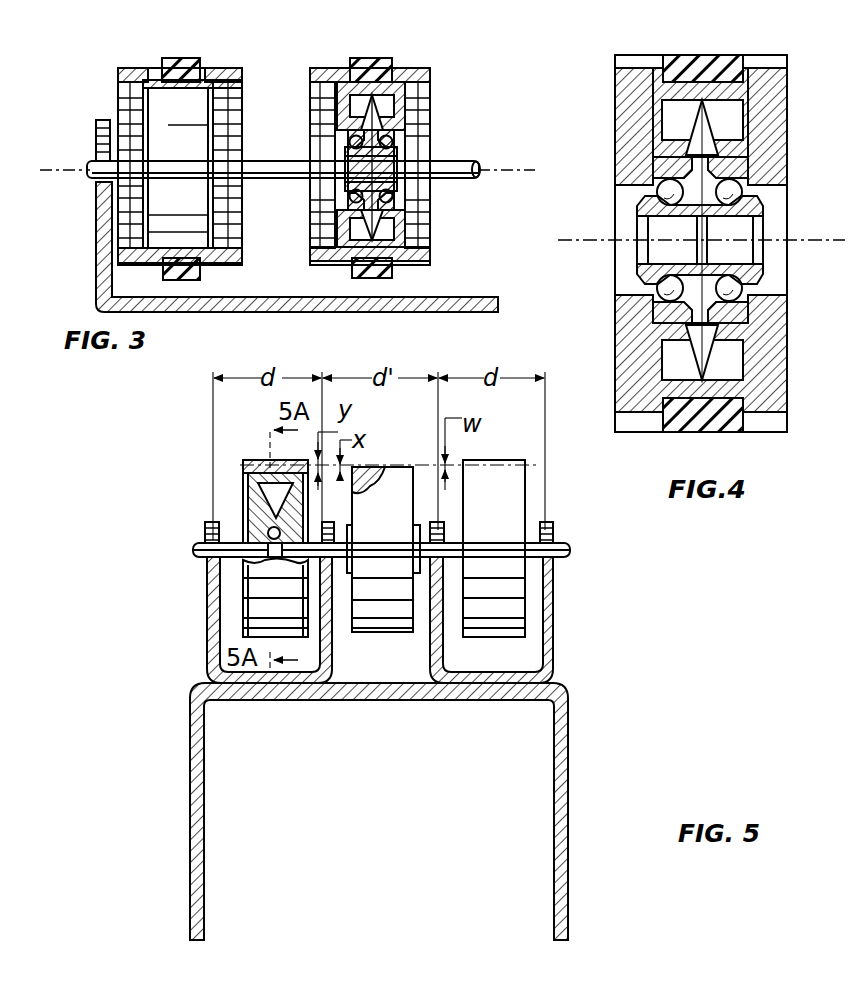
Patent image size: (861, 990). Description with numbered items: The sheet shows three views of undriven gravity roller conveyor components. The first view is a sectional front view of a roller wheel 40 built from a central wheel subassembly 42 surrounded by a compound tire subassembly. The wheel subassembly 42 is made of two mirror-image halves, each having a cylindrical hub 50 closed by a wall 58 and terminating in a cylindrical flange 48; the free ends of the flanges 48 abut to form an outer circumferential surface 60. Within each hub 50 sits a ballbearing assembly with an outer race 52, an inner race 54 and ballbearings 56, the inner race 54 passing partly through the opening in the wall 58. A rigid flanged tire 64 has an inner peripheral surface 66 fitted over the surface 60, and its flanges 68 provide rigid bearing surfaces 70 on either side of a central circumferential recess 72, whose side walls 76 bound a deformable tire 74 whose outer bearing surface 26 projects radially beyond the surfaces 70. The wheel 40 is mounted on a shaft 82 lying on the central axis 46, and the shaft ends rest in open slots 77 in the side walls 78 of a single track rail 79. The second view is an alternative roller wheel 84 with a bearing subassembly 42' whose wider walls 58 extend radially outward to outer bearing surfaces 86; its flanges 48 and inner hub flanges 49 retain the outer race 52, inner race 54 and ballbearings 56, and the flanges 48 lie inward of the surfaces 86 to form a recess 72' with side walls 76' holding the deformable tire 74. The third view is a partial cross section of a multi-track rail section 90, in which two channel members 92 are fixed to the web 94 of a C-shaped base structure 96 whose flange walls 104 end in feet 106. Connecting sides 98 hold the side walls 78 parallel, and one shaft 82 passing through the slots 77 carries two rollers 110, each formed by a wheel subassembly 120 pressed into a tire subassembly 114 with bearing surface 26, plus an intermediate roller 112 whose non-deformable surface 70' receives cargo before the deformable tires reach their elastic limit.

In FIG. 3, the outer circumferential bearing surface of deformable tire 26 is at (372, 60).
In FIG. 4, the outer circumferential bearing surface of deformable tire 26 is at (719, 53).
In FIG. 5, the outer circumferential bearing surface of deformable tire 26 is at (265, 460).
In FIG. 3, the roller wheel 40 is at (245, 60).
In FIG. 3, the central wheel subassembly 42 is at (408, 159).
In FIG. 4, the central bearing portion subassembly 42' is at (616, 126).
In FIG. 3, the central axis 46 is at (505, 175).
In FIG. 4, the central axis 46 is at (802, 246).
In FIG. 3, the cylindrical flange 48 is at (396, 216).
In FIG. 4, the cylindrical flange 48 is at (746, 116).
In FIG. 3, the inner hub flange 49 is at (352, 112).
In FIG. 4, the inner hub flange 49 is at (732, 346).
In FIG. 3, the cylindrical hub 50 is at (410, 150).
In FIG. 3, the outer race 52 is at (346, 205).
In FIG. 4, the outer race 52 is at (655, 167).
In FIG. 3, the inner race 54 is at (341, 190).
In FIG. 4, the inner race 54 is at (636, 222).
In FIG. 3, the ballbearings 56 is at (396, 141).
In FIG. 4, the ballbearings 56 is at (660, 191).
In FIG. 3, the wall 58 is at (336, 136).
In FIG. 4, the wall 58 is at (788, 134).
In FIG. 3, the outer circumferential surface 60 is at (166, 116).
In FIG. 3, the rigid flanged tire 64 is at (118, 80).
In FIG. 3, the inner peripheral surface 66 is at (214, 110).
In FIG. 3, the flanges 68 is at (430, 267).
In FIG. 3, the outer circumferential rigid bearing surface 70 is at (283, 154).
In FIG. 5, the non-deformable outer circumferential bearing surface 70' is at (384, 529).
In FIG. 3, the central circumferential recess 72 is at (192, 301).
In FIG. 4, the central circumferential recess 72' is at (681, 425).
In FIG. 3, the deformable tire 74 is at (181, 58).
In FIG. 4, the deformable tire 74 is at (762, 70).
In FIG. 3, the side walls of recess 76 is at (297, 247).
In FIG. 4, the side walls of recess 76' is at (764, 436).
In FIG. 3, the open slots 77 is at (96, 136).
In FIG. 5, the open slots 77 is at (336, 534).
In FIG. 5, the side walls 78 is at (207, 606).
In FIG. 3, the single track rail 79 is at (438, 313).
In FIG. 5, the single track rail 79 is at (441, 654).
In FIG. 3, the shaft 82 is at (480, 167).
In FIG. 5, the shaft 82 is at (201, 560).
In FIG. 4, the undriven gravity roller wheel 84 is at (621, 60).
In FIG. 4, the outer circumferential bearing surface 86 is at (640, 68).
In FIG. 5, the multi-track conveyor rail section 90 is at (186, 542).
In FIG. 5, the channel member 92 is at (207, 664).
In FIG. 5, the web 94 is at (386, 684).
In FIG. 5, the base structure 96 is at (554, 872).
In FIG. 5, the connecting sides 98 is at (521, 678).
In FIG. 5, the flange walls 104 is at (570, 760).
In FIG. 5, the feet 106 is at (610, 922).
In FIG. 5, the rollers with deformable tires 110 is at (243, 487).
In FIG. 5, the intermediate roller 112 is at (346, 633).
In FIG. 5, the tire subassembly 114 is at (243, 466).
In FIG. 5, the wheel subassembly 120 is at (248, 503).